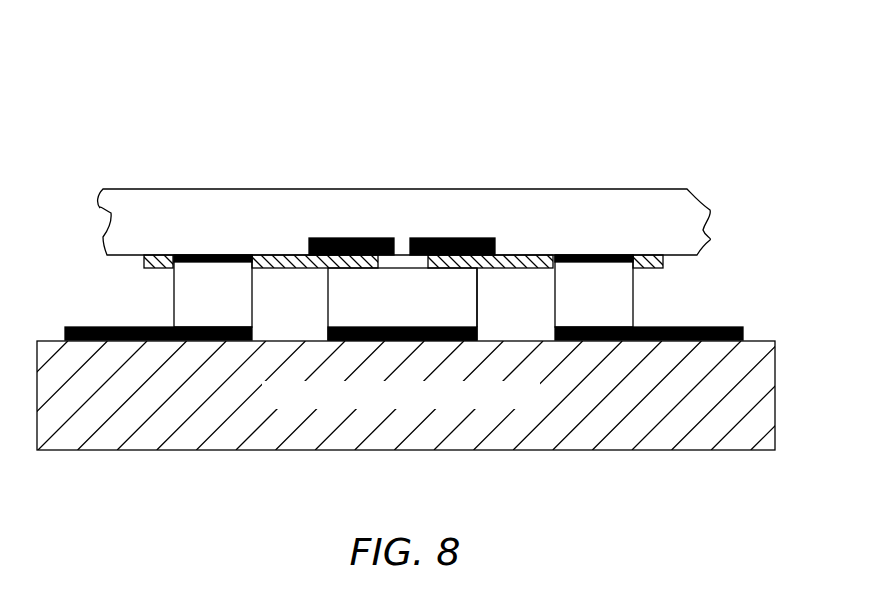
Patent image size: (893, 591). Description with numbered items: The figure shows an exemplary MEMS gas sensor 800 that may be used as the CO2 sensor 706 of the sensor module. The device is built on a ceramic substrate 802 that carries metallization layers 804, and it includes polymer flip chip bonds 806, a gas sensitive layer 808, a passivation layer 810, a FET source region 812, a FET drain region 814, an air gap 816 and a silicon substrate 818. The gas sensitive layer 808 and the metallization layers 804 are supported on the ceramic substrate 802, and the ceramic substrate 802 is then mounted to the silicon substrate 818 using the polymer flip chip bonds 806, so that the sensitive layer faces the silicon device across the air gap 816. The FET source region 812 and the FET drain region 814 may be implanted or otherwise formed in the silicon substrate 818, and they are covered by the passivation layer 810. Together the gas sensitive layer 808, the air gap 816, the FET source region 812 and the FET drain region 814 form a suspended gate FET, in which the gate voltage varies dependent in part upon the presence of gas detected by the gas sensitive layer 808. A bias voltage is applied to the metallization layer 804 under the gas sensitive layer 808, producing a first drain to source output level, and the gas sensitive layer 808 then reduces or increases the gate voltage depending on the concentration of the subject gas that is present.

The CO2 sensor 706 is at (414, 71).
The MEMS gas sensor 800 is at (325, 333).
The ceramic substrate 802 is at (730, 445).
The metallization layers 804 is at (72, 327).
The polymer flip chip bonds 806 is at (174, 310).
The gas sensitive layer 808 is at (478, 303).
The passivation layer 810 is at (263, 257).
The FET source region 812 is at (323, 238).
The FET drain region 814 is at (482, 238).
The air gap 816 is at (404, 262).
The silicon substrate 818 is at (685, 189).